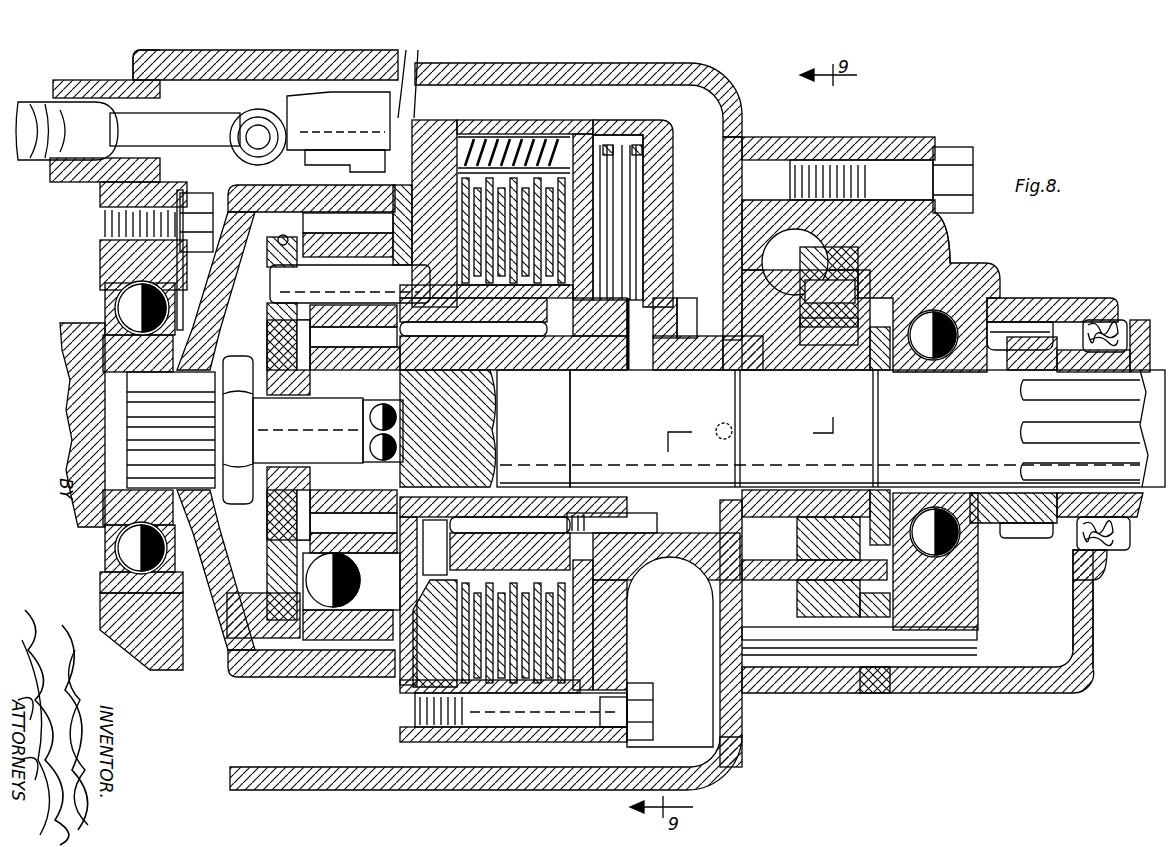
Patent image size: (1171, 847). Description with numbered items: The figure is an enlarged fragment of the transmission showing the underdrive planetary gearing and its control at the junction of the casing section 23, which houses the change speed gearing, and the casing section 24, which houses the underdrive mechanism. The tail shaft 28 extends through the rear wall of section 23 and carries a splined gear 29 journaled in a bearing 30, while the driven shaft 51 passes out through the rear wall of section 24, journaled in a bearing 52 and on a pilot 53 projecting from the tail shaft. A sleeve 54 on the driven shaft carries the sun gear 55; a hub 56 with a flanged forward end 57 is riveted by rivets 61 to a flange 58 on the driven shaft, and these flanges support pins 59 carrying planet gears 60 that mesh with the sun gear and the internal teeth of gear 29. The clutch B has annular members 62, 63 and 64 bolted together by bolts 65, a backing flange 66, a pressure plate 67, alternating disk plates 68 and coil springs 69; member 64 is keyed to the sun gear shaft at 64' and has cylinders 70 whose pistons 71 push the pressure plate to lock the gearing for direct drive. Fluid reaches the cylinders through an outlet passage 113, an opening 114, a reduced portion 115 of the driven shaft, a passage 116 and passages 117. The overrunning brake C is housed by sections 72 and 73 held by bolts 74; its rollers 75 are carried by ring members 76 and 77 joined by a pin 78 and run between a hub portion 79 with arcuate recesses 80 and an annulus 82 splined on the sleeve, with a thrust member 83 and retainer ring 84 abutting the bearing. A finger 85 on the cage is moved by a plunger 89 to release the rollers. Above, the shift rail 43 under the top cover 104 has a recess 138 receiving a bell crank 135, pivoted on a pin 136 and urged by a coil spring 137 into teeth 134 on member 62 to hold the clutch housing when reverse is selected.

The casing section 23 is at (115, 88).
The casing section 24 is at (725, 738).
The tail shaft 28 is at (90, 522).
The gear 29 is at (278, 668).
The bearing 30 is at (118, 308).
The shift rail 43 is at (35, 108).
The driven shaft 51 is at (1132, 362).
The bearing 52 is at (1000, 298).
The pilot 53 is at (340, 450).
The sleeve 54 is at (516, 368).
The sun gear 55 is at (375, 492).
The hub 56 is at (513, 334).
The flanged forward end 57 is at (375, 267).
The flange 58 is at (262, 312).
The pins 59 is at (398, 220).
The planet gears 60 is at (288, 236).
The rivets 61 is at (362, 580).
The annular member 62 is at (418, 742).
The annular member 63 is at (520, 742).
The annular member 64 is at (624, 725).
The key 64' is at (653, 630).
The bolts 65 is at (600, 706).
The flange 66 is at (432, 632).
The pressure plate 67 is at (582, 122).
The disk plates 68 is at (484, 575).
The coil springs 69 is at (545, 134).
The cylinders 70 is at (642, 152).
The pistons 71 is at (628, 190).
The casing section 72 is at (876, 694).
The casing section 73 is at (933, 694).
The bolts 74 is at (840, 160).
The overrunning brake rollers 75 is at (880, 275).
The ring member 76 is at (800, 592).
The ring member 77 is at (845, 620).
The pin 78 is at (810, 580).
The hub portion 79 is at (948, 224).
The arcuate recesses 80 is at (795, 258).
The annulus 82 is at (830, 350).
The thrust member 83 is at (868, 372).
The retainer ring 84 is at (895, 374).
The finger 85 is at (806, 320).
The plunger 89 is at (801, 287).
The top cover 104 is at (70, 80).
The outlet passage 113 is at (716, 426).
The opening 114 is at (732, 372).
The portion of reduced diameter 115 is at (580, 400).
The passage 116 is at (630, 373).
The passages 117 is at (684, 295).
The teeth 134 is at (410, 122).
The bell crank 135 is at (366, 128).
The pin 136 is at (318, 162).
The coil spring 137 is at (258, 130).
The recess 138 is at (38, 162).
The clutch B is at (398, 705).
The overrunning brake C is at (950, 258).